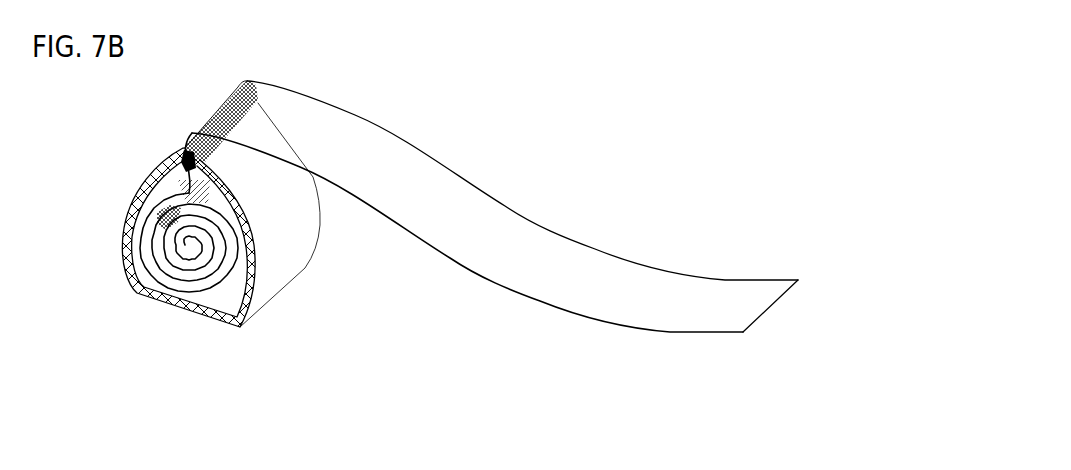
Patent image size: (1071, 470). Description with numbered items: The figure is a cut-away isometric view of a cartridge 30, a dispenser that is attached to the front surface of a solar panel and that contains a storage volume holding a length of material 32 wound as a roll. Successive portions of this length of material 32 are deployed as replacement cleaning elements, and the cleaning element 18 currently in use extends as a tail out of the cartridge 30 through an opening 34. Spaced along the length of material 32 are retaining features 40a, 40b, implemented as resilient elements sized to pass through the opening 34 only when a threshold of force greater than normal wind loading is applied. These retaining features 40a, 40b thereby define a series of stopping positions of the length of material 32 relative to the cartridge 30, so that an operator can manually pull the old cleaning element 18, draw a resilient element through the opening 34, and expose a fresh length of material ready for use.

The cleaning element 18 is at (520, 215).
The cartridge 30 is at (133, 277).
The length of material 32 is at (152, 273).
The opening 34 is at (177, 166).
The retaining feature 40a is at (188, 163).
The retaining feature 40b is at (173, 165).